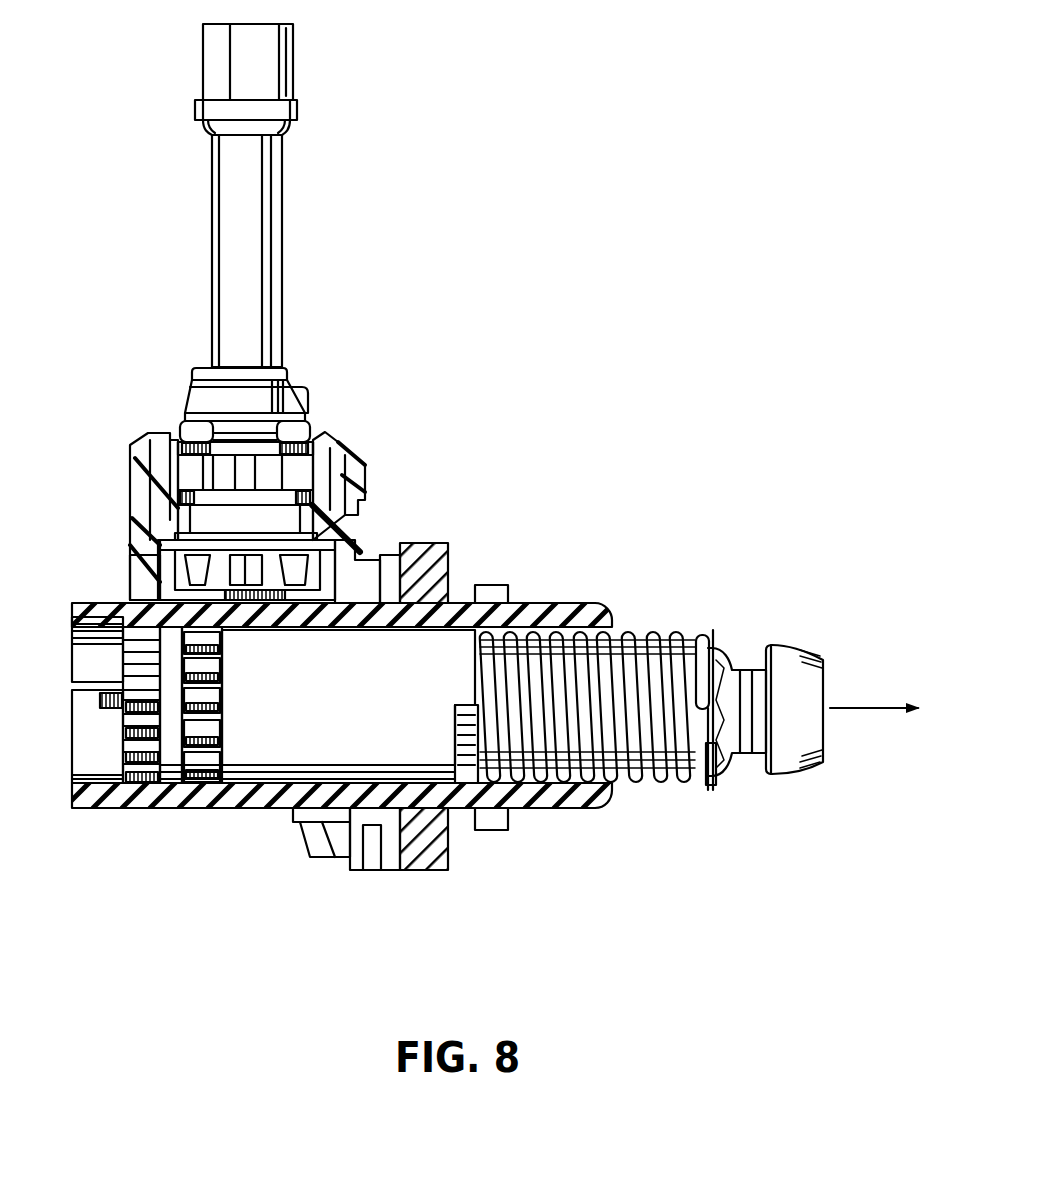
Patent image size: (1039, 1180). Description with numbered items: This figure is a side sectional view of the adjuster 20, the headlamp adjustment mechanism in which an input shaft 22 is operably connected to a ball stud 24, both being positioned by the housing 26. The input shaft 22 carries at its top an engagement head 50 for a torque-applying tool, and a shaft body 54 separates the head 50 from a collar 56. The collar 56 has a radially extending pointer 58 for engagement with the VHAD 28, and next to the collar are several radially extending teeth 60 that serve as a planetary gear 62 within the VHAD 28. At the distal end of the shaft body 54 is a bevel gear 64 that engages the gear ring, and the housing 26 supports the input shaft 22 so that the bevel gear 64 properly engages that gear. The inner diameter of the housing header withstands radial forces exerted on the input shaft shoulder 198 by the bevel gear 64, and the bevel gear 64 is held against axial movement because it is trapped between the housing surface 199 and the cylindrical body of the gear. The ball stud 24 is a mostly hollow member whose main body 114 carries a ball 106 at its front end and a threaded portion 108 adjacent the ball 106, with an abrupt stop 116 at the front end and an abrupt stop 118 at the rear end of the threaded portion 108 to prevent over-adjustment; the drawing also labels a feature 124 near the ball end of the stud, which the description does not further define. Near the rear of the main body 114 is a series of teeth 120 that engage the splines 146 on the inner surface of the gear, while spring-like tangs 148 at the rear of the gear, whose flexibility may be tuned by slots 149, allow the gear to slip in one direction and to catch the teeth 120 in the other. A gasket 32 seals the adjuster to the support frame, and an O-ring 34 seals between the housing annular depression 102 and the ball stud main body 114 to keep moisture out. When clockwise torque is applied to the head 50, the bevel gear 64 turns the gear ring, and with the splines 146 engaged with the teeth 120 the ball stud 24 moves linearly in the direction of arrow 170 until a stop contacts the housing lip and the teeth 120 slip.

The adjuster 20 is at (452, 282).
The input shaft 22 is at (296, 187).
The ball stud 24 is at (708, 790).
The housing 26 is at (530, 810).
The VHAD (non-recalibratable vehicle headlamp aiming device dial) 28 is at (362, 498).
The gasket 32 is at (450, 562).
The O-ring 34 is at (330, 830).
The engagement head 50 is at (210, 56).
The shaft body 54 is at (232, 215).
The collar 56 is at (186, 388).
The pointer 58 is at (300, 397).
The teeth 60 is at (210, 483).
The planetary gear 62 is at (360, 480).
The bevel gear 64 is at (350, 541).
The annular depression 102 is at (448, 838).
The ball 106 is at (793, 752).
The threaded portion 108 is at (709, 630).
The main body 114 is at (285, 750).
The abrupt stop 116 is at (462, 718).
The abrupt stop 118 is at (728, 655).
The teeth 120 is at (178, 805).
The collar 124 is at (750, 770).
The splines 146 is at (115, 785).
The tangs 148 is at (80, 700).
The slots 149 is at (92, 685).
The arrow 170 is at (872, 704).
The input shaft shoulder 198 is at (195, 520).
The housing surface 199 is at (136, 553).